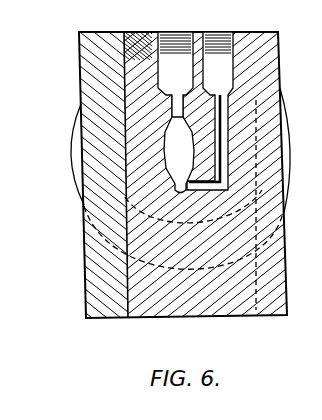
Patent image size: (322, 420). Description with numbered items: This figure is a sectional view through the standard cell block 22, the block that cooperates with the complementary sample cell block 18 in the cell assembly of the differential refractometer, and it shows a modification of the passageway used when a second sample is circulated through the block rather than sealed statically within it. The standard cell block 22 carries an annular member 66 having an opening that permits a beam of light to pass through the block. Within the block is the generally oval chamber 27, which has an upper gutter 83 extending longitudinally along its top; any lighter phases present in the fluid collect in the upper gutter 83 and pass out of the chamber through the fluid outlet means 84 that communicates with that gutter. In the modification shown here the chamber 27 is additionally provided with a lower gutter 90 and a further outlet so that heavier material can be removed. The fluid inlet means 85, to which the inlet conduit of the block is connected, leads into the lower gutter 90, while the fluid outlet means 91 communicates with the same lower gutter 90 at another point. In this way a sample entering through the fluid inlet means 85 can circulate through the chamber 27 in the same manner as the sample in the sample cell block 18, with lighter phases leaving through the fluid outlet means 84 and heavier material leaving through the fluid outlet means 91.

The sample cell block 18 is at (95, 283).
The standard cell block 22 is at (245, 317).
The chamber 27 is at (183, 160).
The annular member 66 is at (71, 153).
The upper gutter 83 is at (169, 122).
The fluid outlet means 84 is at (170, 31).
The fluid inlet means 85 is at (221, 31).
The lower gutter 90 is at (124, 196).
The fluid outlet means 91 is at (123, 29).